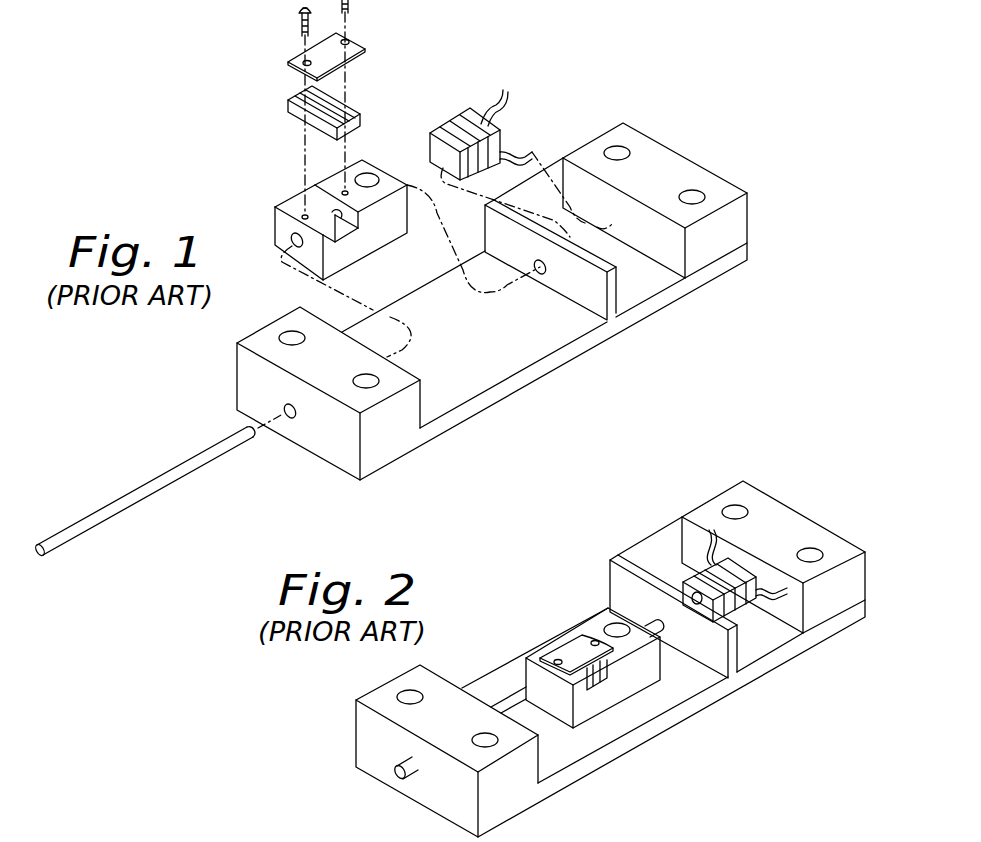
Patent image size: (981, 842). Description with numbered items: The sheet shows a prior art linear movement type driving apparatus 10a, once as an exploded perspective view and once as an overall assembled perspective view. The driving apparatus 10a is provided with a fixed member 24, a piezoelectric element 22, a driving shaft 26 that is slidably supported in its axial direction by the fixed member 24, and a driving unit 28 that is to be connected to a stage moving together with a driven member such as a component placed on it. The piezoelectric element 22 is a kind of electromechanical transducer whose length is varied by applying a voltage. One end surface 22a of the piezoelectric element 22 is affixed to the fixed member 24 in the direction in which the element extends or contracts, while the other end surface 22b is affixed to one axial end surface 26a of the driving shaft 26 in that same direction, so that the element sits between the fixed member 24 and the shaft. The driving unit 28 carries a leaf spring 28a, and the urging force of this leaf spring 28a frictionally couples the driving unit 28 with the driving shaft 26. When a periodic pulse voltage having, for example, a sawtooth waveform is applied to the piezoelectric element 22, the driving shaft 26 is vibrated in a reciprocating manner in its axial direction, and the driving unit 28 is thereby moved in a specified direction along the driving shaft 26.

In FIG. 1, the driving apparatus 10a is at (680, 88).
In FIG. 2, the driving apparatus 10a is at (790, 445).
In FIG. 1, the piezoelectric element 22 is at (463, 118).
In FIG. 2, the piezoelectric element 22 is at (707, 563).
In FIG. 1, the one end surface 22a is at (507, 140).
In FIG. 1, the other end surface 22b is at (433, 153).
In FIG. 1, the fixed member 24 is at (591, 145).
In FIG. 2, the fixed member 24 is at (718, 488).
In FIG. 1, the driving shaft 26 is at (122, 497).
In FIG. 2, the driving shaft 26 is at (513, 700).
In FIG. 1, the axial end surface 26a is at (250, 433).
In FIG. 1, the driving unit 28 is at (252, 50).
In FIG. 2, the driving unit 28 is at (577, 628).
In FIG. 1, the leaf spring 28a is at (297, 53).